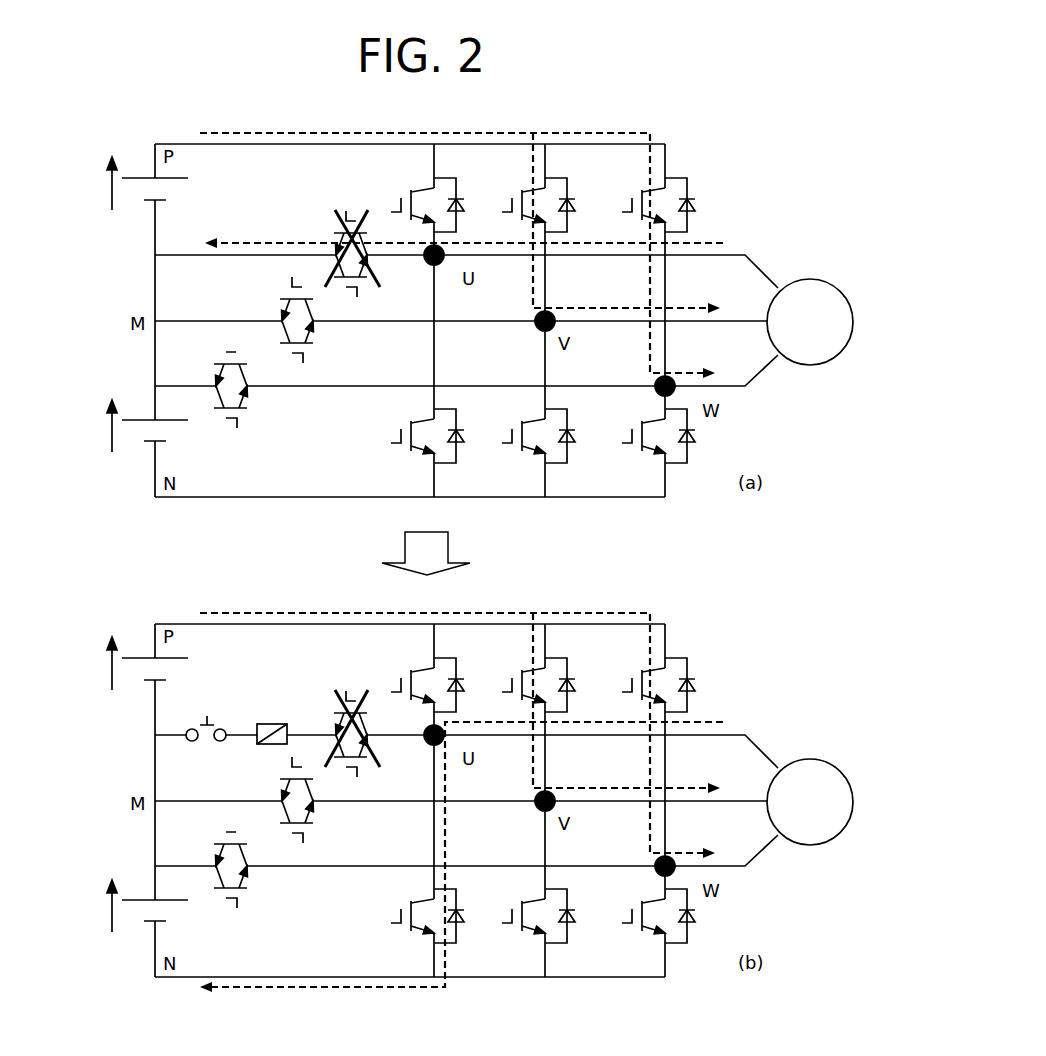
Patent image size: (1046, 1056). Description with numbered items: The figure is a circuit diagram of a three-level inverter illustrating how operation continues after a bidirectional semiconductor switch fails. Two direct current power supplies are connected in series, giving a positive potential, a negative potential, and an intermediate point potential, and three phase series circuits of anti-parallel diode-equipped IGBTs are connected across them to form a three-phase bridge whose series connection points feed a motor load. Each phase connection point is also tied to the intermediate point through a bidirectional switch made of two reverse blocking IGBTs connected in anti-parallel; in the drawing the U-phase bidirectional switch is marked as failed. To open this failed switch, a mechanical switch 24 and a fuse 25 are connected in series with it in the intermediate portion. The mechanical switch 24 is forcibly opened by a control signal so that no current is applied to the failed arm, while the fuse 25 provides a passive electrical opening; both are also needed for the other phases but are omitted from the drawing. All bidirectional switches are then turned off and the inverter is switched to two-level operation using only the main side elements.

The mechanical switch 24 is at (199, 756).
The fuse 25 is at (258, 706).